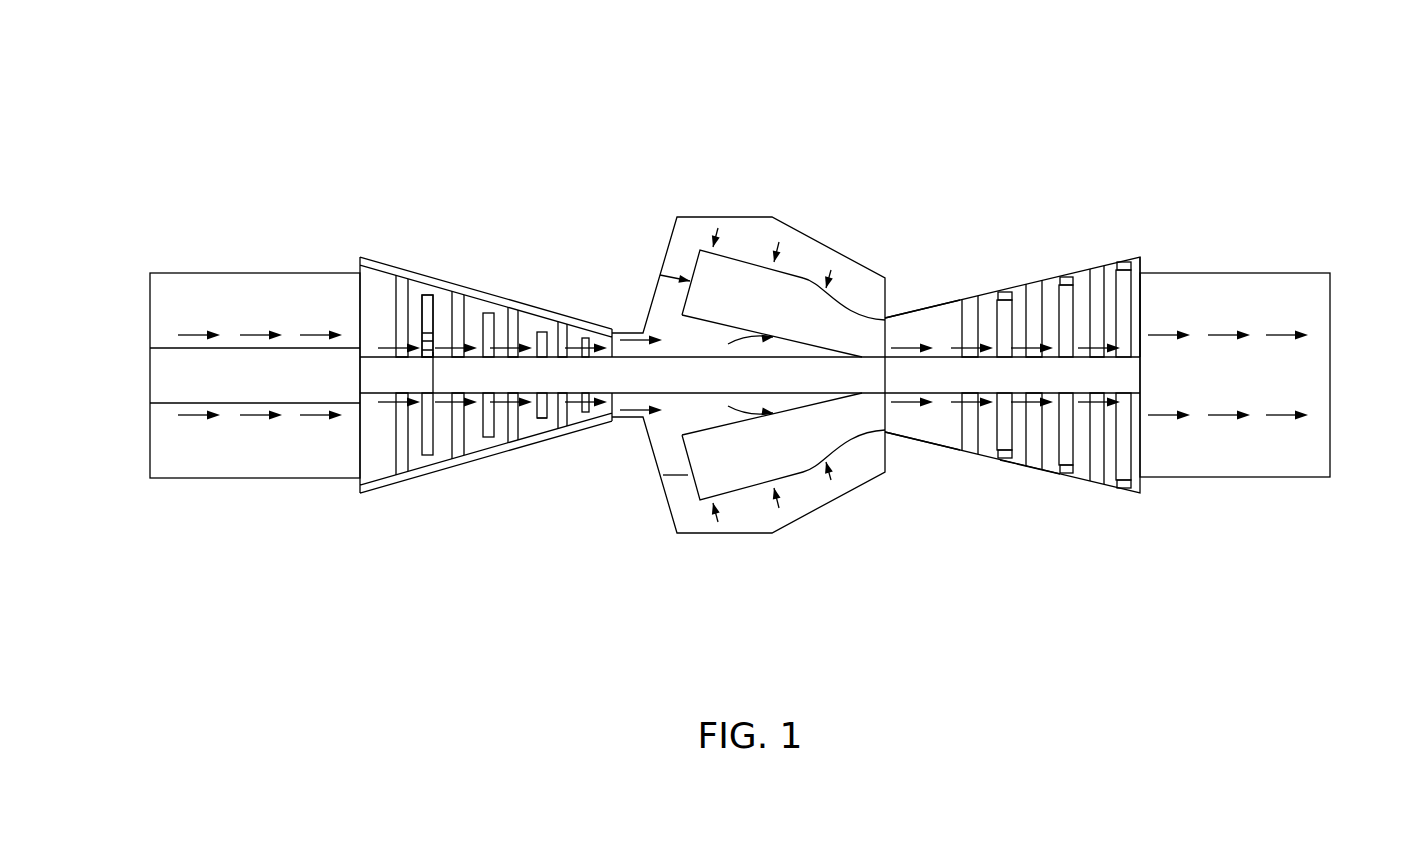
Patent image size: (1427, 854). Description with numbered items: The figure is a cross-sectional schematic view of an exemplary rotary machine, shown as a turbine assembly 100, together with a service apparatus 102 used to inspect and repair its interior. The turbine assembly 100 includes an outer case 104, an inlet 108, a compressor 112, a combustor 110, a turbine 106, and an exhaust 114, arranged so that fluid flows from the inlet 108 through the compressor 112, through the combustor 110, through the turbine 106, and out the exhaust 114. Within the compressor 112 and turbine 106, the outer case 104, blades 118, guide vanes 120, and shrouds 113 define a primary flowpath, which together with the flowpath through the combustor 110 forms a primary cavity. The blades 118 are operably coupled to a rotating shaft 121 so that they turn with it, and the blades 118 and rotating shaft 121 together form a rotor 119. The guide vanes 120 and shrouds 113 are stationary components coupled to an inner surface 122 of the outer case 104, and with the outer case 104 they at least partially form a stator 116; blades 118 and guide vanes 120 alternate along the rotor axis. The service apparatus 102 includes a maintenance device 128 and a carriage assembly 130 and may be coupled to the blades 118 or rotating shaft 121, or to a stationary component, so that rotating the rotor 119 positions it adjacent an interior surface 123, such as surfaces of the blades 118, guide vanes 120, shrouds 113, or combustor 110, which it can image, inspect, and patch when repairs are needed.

The turbine assembly 100 is at (1222, 95).
The service apparatus 102 is at (420, 316).
The outer case 104 is at (373, 490).
The turbine 106 is at (1052, 486).
The inlet 108 is at (138, 400).
The combustor 110 is at (725, 552).
The compressor 112 is at (441, 510).
The shrouds 113 is at (1003, 458).
The exhaust 114 is at (1343, 398).
The stator 116 is at (1031, 476).
The blades 118 is at (408, 300).
The rotor 119 is at (1140, 306).
The guide vanes 120 is at (395, 292).
The rotating shaft 121 is at (383, 372).
The inner surface 122 is at (932, 322).
The interior surface 123 is at (543, 420).
The maintenance device 128 is at (432, 333).
The carriage assembly 130 is at (433, 393).